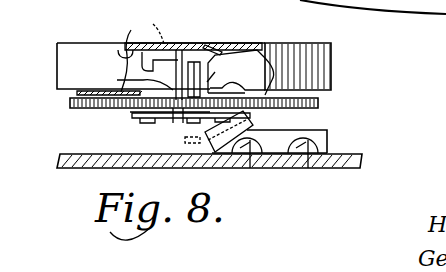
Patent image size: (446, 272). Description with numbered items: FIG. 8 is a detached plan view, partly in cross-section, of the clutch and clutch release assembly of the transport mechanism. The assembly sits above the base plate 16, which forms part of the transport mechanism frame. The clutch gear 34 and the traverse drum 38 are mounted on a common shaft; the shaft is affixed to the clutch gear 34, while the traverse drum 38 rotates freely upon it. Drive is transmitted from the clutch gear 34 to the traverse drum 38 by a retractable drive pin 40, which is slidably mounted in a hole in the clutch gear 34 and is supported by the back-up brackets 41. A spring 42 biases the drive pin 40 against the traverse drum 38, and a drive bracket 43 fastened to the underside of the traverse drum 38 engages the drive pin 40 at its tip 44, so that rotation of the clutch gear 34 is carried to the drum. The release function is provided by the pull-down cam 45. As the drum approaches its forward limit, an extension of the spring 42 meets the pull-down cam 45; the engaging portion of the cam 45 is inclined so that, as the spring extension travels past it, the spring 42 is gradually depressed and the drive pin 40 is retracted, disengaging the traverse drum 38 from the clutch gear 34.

The base plate 16 is at (348, 158).
The clutch gear 34 is at (70, 102).
The traverse drum 38 is at (332, 68).
The retractable drive pin 40 is at (241, 72).
The back-up brackets 41 is at (122, 81).
The spring 42 is at (163, 118).
The drive bracket 43 is at (149, 51).
The tip 44 is at (208, 50).
The pull-down cam 45 is at (223, 137).